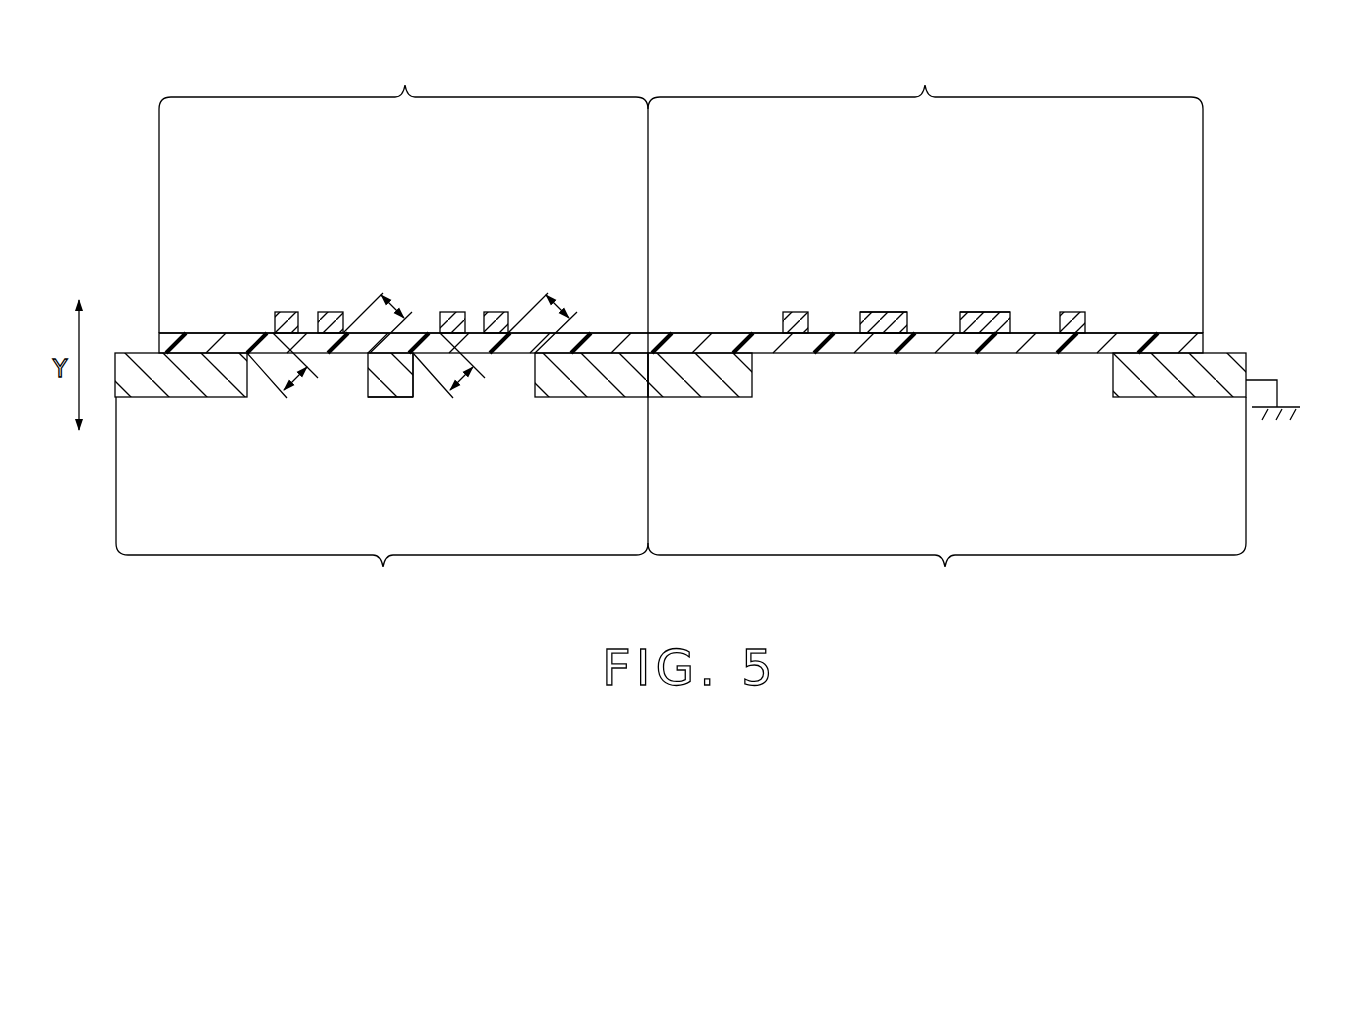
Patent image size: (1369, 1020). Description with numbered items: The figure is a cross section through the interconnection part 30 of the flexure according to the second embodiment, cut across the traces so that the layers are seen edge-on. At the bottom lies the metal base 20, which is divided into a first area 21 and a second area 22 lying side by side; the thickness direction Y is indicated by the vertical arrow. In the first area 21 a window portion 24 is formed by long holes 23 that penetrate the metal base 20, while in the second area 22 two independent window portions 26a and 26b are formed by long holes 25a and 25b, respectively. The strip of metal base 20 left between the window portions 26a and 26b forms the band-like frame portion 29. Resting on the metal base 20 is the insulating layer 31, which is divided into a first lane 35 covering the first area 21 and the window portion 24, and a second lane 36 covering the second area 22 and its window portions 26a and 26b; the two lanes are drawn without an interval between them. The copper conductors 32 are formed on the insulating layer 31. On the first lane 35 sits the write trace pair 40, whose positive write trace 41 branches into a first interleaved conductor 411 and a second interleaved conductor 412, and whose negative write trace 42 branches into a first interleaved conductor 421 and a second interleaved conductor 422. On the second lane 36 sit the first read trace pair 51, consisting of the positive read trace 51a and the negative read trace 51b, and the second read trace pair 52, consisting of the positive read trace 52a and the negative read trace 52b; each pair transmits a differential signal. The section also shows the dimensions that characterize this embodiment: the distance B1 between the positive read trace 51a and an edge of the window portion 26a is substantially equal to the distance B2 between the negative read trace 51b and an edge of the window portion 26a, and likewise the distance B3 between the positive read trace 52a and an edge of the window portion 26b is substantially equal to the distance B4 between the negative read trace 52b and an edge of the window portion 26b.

The metal base 20 is at (1224, 372).
The first area 21 is at (947, 500).
The second area 22 is at (382, 500).
The long hole 23 is at (1113, 392).
The window portion 24 is at (753, 391).
The long hole 25a is at (421, 388).
The long hole 25b is at (257, 398).
The window portion 26a is at (534, 391).
The window portion 26b is at (368, 391).
The frame portion 29 is at (402, 398).
The interconnection part 30 is at (763, 320).
The insulating layer 31 is at (1162, 345).
The conductor 32 is at (1092, 318).
The first lane 35 is at (925, 193).
The second lane 36 is at (403, 192).
The write trace pair 40 is at (859, 305).
The positive write trace 41 is at (908, 305).
The negative write trace 42 is at (1011, 305).
The first interleaved conductor 411 is at (882, 311).
The second interleaved conductor 412 is at (1075, 311).
The first interleaved conductor 421 is at (987, 311).
The second interleaved conductor 422 is at (798, 311).
The first read trace pair 51 is at (483, 259).
The positive read trace 51a is at (452, 311).
The negative read trace 51b is at (495, 311).
The second read trace pair 52 is at (307, 259).
The positive read trace 52a is at (330, 311).
The negative read trace 52b is at (283, 311).
The distance B1 is at (452, 375).
The distance B2 is at (549, 314).
The distance B3 is at (384, 314).
The distance B4 is at (286, 375).